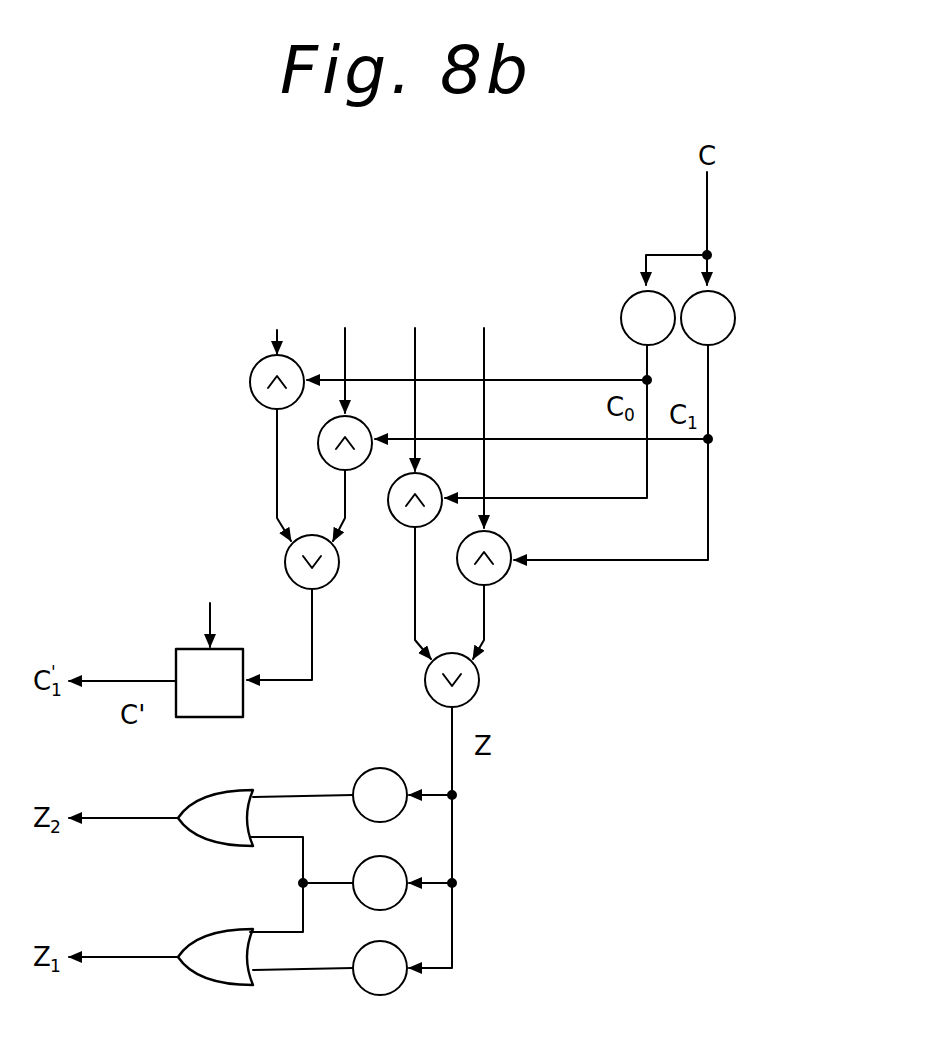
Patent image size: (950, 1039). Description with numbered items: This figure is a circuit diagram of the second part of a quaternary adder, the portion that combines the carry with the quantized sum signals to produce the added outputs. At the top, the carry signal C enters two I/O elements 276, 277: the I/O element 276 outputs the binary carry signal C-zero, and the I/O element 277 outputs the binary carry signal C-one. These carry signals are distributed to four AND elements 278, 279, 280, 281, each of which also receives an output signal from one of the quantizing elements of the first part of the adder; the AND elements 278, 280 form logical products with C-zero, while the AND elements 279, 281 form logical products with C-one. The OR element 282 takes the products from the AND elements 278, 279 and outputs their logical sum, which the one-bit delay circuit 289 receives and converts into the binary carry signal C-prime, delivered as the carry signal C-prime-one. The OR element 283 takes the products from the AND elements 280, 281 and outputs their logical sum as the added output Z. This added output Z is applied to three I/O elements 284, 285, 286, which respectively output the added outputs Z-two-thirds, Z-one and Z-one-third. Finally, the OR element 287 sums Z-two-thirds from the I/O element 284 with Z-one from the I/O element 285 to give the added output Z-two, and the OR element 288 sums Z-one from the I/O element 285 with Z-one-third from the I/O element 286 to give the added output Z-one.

The I/O element 276 is at (620, 318).
The I/O element 277 is at (735, 318).
The AND element 278 is at (249, 381).
The AND element 279 is at (322, 455).
The AND element 280 is at (391, 513).
The AND element 281 is at (494, 584).
The OR element 282 is at (331, 587).
The OR element 283 is at (480, 686).
The I/O element 284 is at (379, 768).
The I/O element 285 is at (412, 847).
The I/O element 286 is at (416, 930).
The OR element 287 is at (236, 788).
The OR element 288 is at (228, 927).
The one-bit delay circuit 289 is at (227, 647).